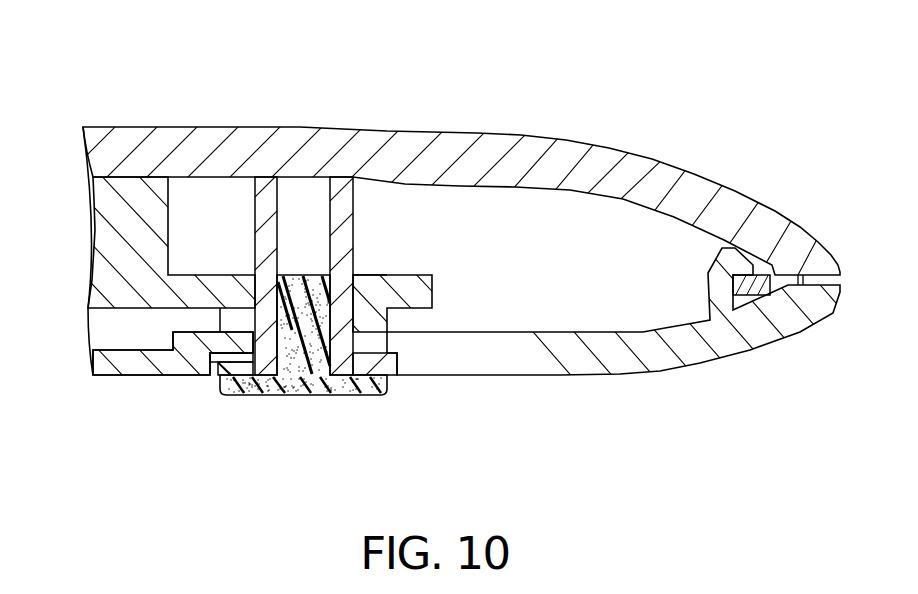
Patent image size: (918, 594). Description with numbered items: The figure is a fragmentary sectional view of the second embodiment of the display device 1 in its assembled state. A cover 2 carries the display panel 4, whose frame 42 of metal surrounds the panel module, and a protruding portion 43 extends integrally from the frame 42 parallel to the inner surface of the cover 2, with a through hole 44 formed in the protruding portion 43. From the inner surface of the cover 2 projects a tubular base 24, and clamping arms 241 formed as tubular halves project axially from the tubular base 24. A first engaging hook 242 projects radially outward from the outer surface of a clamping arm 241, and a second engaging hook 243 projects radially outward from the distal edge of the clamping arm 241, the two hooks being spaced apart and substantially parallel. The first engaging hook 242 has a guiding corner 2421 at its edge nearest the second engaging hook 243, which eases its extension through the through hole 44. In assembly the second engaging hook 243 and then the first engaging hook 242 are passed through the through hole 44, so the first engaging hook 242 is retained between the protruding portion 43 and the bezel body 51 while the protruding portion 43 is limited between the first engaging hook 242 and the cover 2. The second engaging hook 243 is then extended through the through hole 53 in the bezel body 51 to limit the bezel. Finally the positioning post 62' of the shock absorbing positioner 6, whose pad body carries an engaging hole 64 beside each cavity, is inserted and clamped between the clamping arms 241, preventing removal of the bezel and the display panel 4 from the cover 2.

The display device 1 is at (693, 149).
The cover 2 is at (317, 149).
The tubular base 24 is at (253, 227).
The clamping arm 241 is at (338, 222).
The first engaging hook 242 is at (233, 323).
The guiding corner 2421 is at (393, 333).
The second engaging hook 243 is at (245, 362).
The engaging hole 64 is at (173, 353).
The display panel 4 is at (89, 215).
The frame 42 is at (128, 247).
The protruding portion 43 is at (413, 291).
The through hole 44 is at (351, 272).
The bezel body 51 is at (685, 378).
The through hole 53 is at (258, 385).
The shock absorbing positioner 6 is at (282, 403).
The positioning post 62' is at (307, 360).